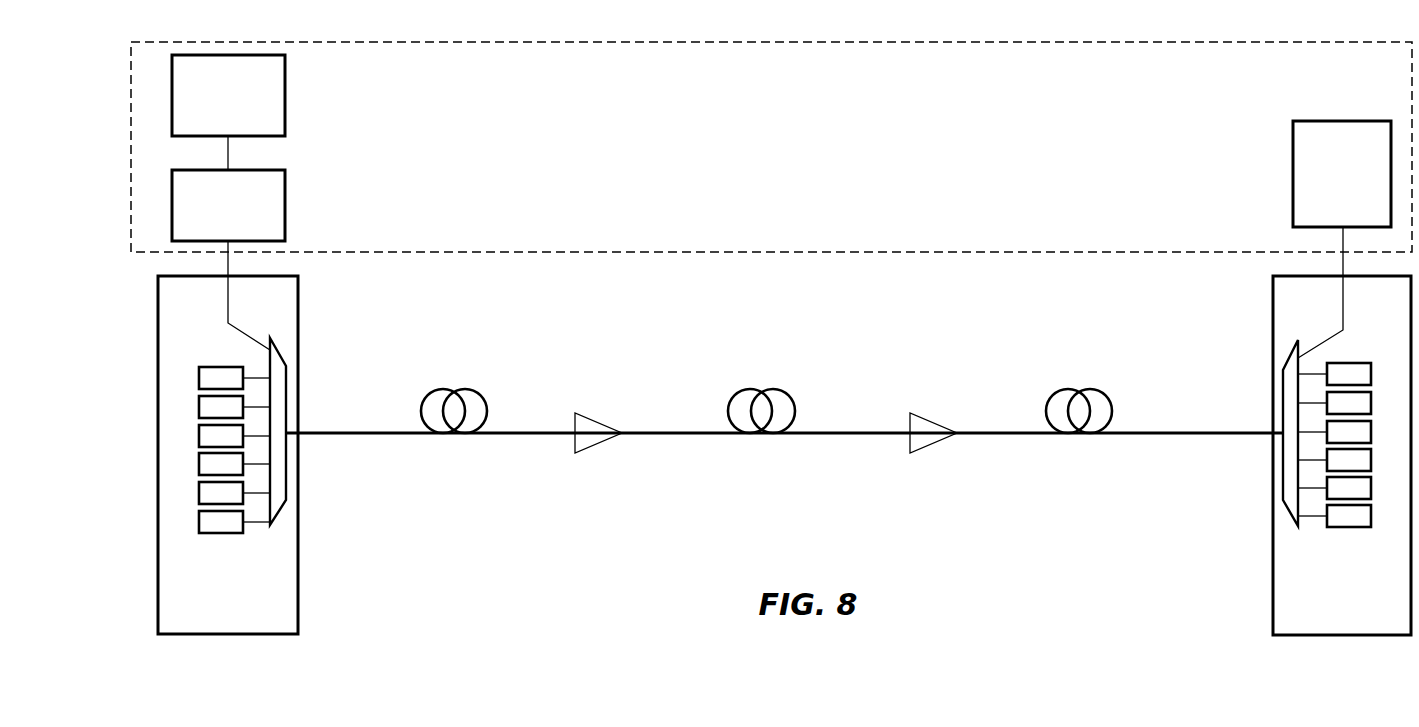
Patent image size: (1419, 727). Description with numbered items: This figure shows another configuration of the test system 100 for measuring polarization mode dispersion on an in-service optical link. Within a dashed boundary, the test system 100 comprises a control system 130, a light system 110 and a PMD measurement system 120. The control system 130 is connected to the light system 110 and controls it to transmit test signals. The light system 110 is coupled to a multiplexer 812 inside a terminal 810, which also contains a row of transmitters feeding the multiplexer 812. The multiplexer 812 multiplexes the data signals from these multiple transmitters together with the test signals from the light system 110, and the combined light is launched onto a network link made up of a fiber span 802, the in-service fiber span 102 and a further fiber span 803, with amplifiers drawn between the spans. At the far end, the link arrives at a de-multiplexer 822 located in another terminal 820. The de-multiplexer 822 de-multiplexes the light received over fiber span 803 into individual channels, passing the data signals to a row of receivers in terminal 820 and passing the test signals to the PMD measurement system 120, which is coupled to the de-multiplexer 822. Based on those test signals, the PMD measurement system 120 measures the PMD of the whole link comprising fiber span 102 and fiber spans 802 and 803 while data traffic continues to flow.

The test system 100 is at (857, 71).
The control system 130 is at (242, 127).
The light system 110 is at (242, 238).
The PMD measurement system 120 is at (1356, 217).
The terminal 810 is at (241, 623).
The terminal 820 is at (1356, 624).
The multiplexer 812 is at (288, 381).
The de-multiplexer 822 is at (1283, 372).
The fiber span 802 is at (441, 465).
The fiber span 102 is at (766, 461).
The fiber span 803 is at (1075, 461).